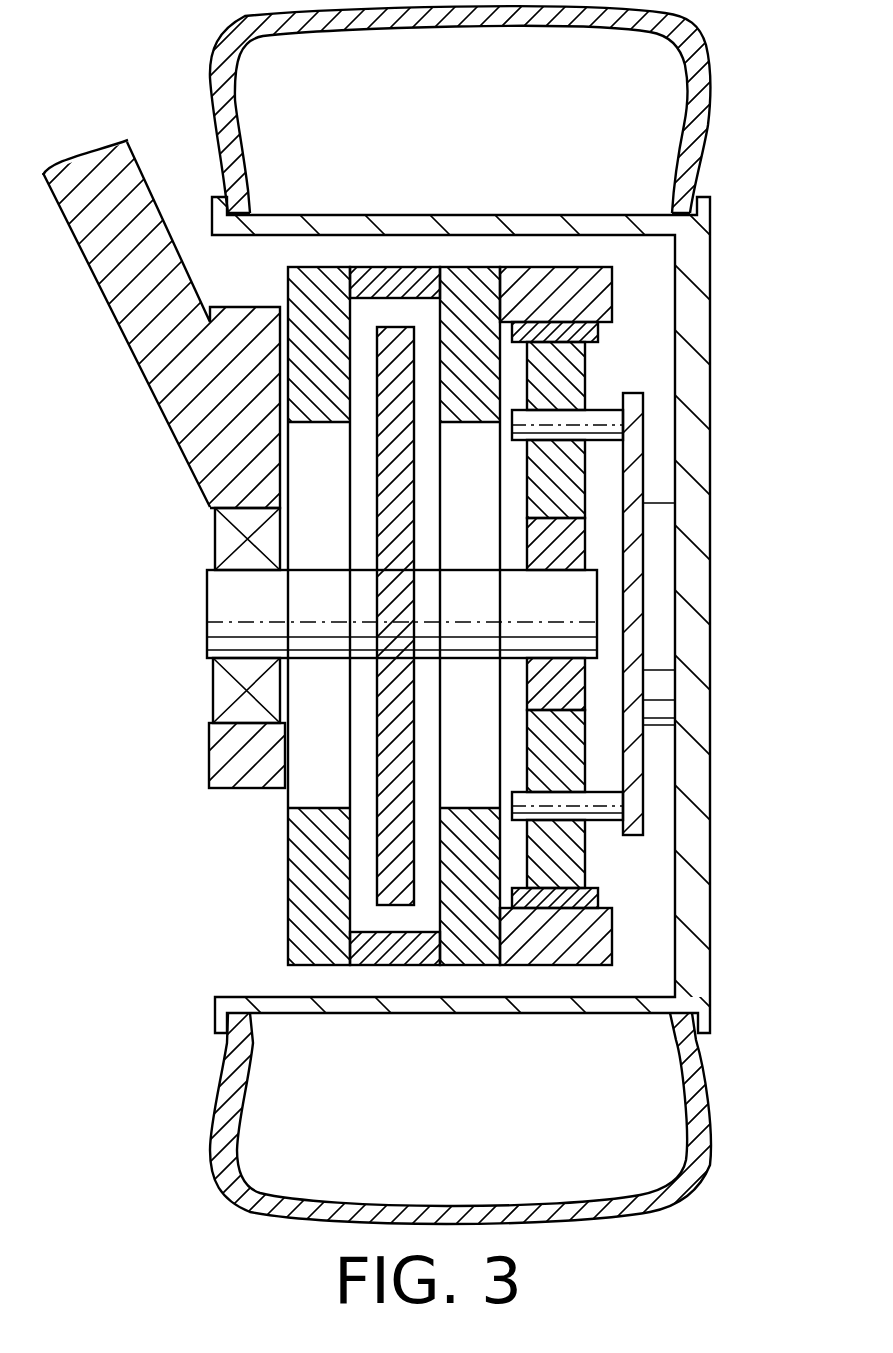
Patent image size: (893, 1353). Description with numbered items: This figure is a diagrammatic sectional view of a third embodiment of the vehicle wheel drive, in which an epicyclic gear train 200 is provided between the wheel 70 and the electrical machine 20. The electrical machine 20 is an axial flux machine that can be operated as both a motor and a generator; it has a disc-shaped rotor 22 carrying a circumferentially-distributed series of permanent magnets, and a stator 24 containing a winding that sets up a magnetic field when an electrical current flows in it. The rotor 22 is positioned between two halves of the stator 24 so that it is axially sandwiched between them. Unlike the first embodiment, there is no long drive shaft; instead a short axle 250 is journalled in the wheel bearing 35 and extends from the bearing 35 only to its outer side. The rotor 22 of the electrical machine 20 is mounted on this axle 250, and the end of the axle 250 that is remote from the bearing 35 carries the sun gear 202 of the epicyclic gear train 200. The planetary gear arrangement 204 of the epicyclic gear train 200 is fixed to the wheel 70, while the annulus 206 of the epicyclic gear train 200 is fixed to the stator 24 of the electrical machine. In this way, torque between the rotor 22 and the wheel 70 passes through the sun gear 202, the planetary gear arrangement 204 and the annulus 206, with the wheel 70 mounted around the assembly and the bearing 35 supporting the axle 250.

The electrical machine 20 is at (319, 616).
The rotor 22 is at (377, 486).
The stator 24 is at (290, 876).
The wheel bearing 35 is at (215, 695).
The wheel 70 is at (708, 338).
The epicyclic gear train 200 is at (641, 598).
The sun gear 202 is at (586, 545).
The planetary gear arrangement 204 is at (647, 418).
The annulus 206 is at (613, 938).
The axle 250 is at (207, 618).